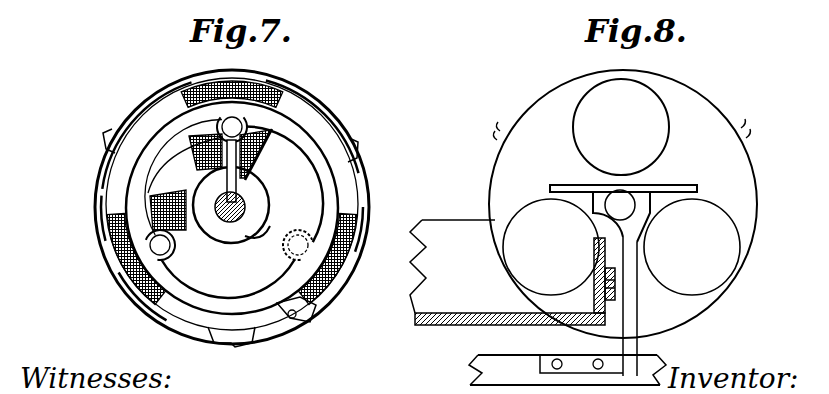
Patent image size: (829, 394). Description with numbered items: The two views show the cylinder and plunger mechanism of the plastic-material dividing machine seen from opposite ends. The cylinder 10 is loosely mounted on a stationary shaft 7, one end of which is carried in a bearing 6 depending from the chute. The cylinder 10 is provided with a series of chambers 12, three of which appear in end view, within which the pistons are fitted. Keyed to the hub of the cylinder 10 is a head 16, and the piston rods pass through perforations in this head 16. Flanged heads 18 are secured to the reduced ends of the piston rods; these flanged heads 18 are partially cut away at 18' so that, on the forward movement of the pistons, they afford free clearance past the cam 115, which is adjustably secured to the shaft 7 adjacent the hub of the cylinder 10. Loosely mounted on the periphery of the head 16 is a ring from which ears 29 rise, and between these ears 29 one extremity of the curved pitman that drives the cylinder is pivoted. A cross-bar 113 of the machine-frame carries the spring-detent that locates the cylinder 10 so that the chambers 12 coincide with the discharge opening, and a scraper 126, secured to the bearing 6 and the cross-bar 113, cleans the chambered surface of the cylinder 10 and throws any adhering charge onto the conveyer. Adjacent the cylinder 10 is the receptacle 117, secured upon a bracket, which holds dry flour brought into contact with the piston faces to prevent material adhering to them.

In FIG. 8, the bearing 6 is at (637, 192).
In FIG. 7, the stationary shaft 7 is at (248, 207).
In FIG. 8, the stationary shaft 7 is at (622, 207).
In FIG. 7, the cylinder 10 is at (277, 337).
In FIG. 8, the cylinder 10 is at (623, 204).
In FIG. 7, the chambers 12 is at (250, 80).
In FIG. 8, the chambers 12 is at (621, 187).
In FIG. 7, the head 16 is at (196, 188).
In FIG. 7, the flanged heads 18 is at (216, 196).
In FIG. 7, the cut-away portion 18' is at (258, 162).
In FIG. 7, the ears 29 is at (318, 313).
In FIG. 8, the cross-bar 113 is at (567, 370).
In FIG. 7, the cam 115 is at (232, 208).
In FIG. 8, the receptacle 117 is at (512, 272).
In FIG. 8, the scraper 126 is at (628, 310).